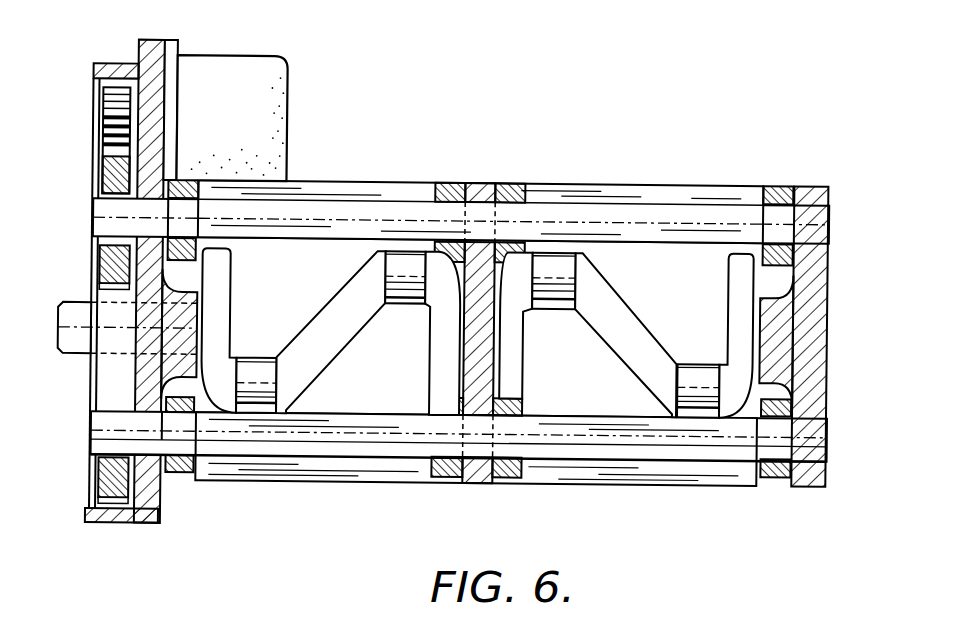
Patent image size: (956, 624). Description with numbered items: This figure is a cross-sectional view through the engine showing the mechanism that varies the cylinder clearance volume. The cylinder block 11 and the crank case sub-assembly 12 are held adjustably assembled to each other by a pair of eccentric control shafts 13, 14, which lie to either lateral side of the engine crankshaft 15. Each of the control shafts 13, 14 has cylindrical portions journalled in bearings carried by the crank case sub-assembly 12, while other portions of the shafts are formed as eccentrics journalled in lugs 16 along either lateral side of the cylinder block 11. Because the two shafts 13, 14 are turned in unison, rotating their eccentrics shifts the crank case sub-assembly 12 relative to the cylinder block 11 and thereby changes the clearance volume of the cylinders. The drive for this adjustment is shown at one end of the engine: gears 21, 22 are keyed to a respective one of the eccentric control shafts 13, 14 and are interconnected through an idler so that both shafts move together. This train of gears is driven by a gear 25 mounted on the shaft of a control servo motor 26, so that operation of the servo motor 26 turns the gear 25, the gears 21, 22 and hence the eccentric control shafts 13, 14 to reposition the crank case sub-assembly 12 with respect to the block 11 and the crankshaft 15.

The cylinder block 11 is at (542, 185).
The crank case sub-assembly 12 is at (817, 186).
The eccentric control shaft 13 is at (625, 213).
The eccentric control shaft 14 is at (640, 444).
The crankshaft 15 is at (637, 328).
The lug 16 is at (185, 478).
The gear 21 is at (105, 262).
The gear 22 is at (100, 481).
The gear 25 is at (101, 109).
The control servo motor 26 is at (258, 56).